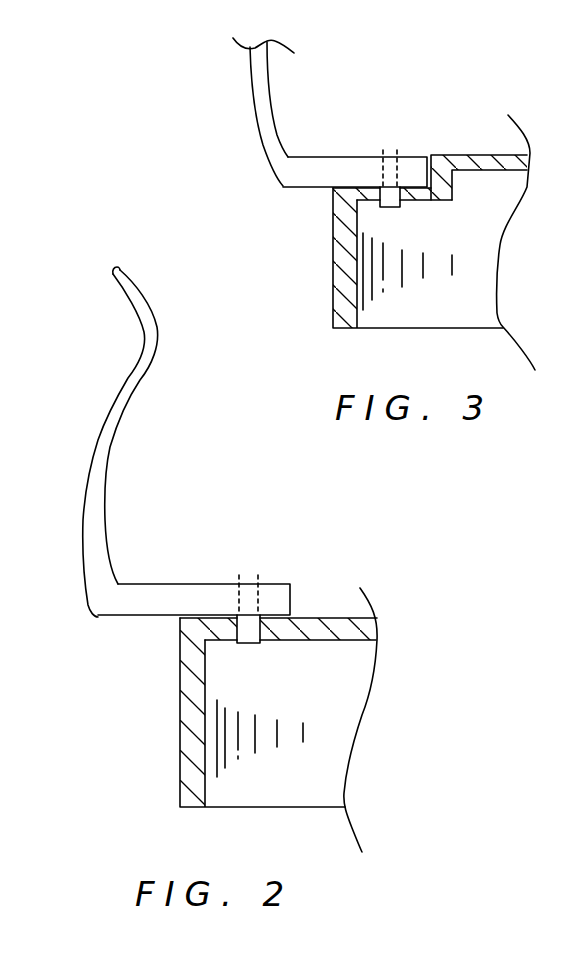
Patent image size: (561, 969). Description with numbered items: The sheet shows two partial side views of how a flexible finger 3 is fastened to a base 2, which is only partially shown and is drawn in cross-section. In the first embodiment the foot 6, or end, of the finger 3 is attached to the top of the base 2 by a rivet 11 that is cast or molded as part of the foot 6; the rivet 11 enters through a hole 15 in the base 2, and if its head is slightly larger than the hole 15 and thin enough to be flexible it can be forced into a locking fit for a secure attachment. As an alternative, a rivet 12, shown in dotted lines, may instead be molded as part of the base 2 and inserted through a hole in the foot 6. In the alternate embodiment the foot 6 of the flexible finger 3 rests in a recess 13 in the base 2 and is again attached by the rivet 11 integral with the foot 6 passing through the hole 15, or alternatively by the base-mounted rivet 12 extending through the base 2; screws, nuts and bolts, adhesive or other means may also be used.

In FIG. 3, the base 2 is at (304, 288).
In FIG. 2, the base 2 is at (136, 745).
In FIG. 3, the flexible finger 3 is at (262, 103).
In FIG. 2, the flexible finger 3 is at (134, 383).
In FIG. 3, the foot 6 is at (332, 182).
In FIG. 2, the foot 6 is at (170, 610).
In FIG. 3, the rivet 11 is at (395, 211).
In FIG. 2, the rivet 11 is at (250, 645).
In FIG. 3, the rivet 12 is at (390, 152).
In FIG. 2, the rivet 12 is at (258, 582).
In FIG. 3, the recess 13 is at (337, 196).
In FIG. 3, the hole 15 is at (452, 197).
In FIG. 2, the hole 15 is at (283, 634).